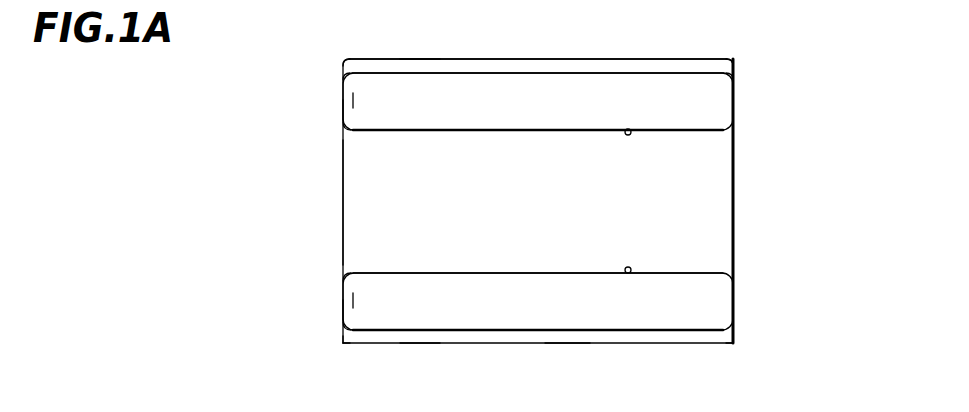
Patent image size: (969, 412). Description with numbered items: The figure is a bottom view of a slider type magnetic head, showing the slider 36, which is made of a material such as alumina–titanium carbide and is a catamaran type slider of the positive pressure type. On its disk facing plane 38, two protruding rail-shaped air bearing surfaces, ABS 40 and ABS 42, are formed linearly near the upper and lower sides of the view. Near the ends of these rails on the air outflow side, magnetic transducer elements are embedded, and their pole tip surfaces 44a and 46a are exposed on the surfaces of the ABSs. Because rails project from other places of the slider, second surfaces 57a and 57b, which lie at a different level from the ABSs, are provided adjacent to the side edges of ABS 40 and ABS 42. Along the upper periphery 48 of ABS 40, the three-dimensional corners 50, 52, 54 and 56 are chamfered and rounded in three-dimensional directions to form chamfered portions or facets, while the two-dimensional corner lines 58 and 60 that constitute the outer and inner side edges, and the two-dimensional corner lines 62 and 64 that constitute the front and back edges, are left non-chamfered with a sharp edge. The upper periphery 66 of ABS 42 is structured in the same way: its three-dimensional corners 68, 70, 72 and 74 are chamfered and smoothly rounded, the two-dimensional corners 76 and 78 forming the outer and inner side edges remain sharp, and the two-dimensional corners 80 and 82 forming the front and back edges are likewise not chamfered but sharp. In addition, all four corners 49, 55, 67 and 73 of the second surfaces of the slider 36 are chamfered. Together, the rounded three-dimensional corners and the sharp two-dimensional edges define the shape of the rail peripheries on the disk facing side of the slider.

The slider 36 is at (769, 40).
The disk facing plane 38 is at (365, 202).
The ABS 40 is at (670, 80).
The ABS 42 is at (670, 320).
The pole tip surface 44a is at (342, 113).
The pole tip surface 46a is at (342, 311).
The upper periphery 48 is at (508, 71).
The corner 49 is at (727, 58).
The three-dimensional corner 50 is at (735, 74).
The three-dimensional corner 52 is at (735, 128).
The three-dimensional corner 54 is at (343, 127).
The corner 55 is at (345, 58).
The three-dimensional corner 56 is at (343, 73).
The second surface 57a is at (422, 58).
The second surface 57b is at (422, 334).
The two-dimensional corner line 58 is at (563, 72).
The two-dimensional corner line 60 is at (628, 129).
The two-dimensional corner line 62 is at (735, 104).
The two-dimensional corner line 64 is at (352, 100).
The upper periphery 66 is at (505, 334).
The corner 67 is at (723, 344).
The three-dimensional corner 68 is at (735, 328).
The three-dimensional corner 70 is at (735, 278).
The three-dimensional corner 72 is at (343, 276).
The corner 73 is at (344, 344).
The three-dimensional corner 74 is at (343, 330).
The two-dimensional corner 76 is at (563, 334).
The two-dimensional corner 78 is at (628, 273).
The two-dimensional corner 80 is at (735, 304).
The two-dimensional corner 82 is at (352, 302).